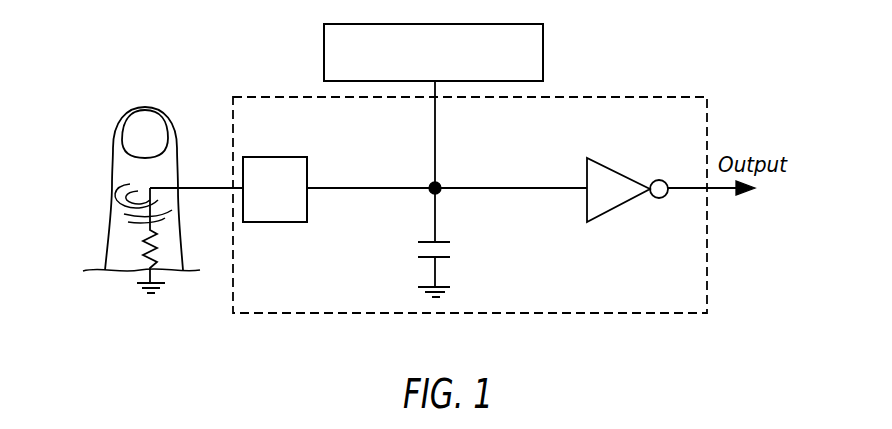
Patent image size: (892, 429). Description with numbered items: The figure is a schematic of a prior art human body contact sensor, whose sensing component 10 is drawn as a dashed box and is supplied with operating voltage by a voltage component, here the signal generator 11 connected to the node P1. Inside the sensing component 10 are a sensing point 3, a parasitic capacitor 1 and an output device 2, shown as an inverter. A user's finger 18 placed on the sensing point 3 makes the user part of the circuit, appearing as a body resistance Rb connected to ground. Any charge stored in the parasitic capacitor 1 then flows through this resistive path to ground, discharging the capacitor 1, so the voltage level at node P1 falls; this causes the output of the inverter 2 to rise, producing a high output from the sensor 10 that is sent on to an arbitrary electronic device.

The parasitic capacitor 1 is at (450, 242).
The output device 2 is at (623, 205).
The sensing point 3 is at (272, 223).
The sensing component 10 is at (353, 315).
The signal generator 11 is at (543, 45).
The finger 18 is at (141, 168).
The node P1 is at (441, 183).
The body resistance Rb is at (139, 240).